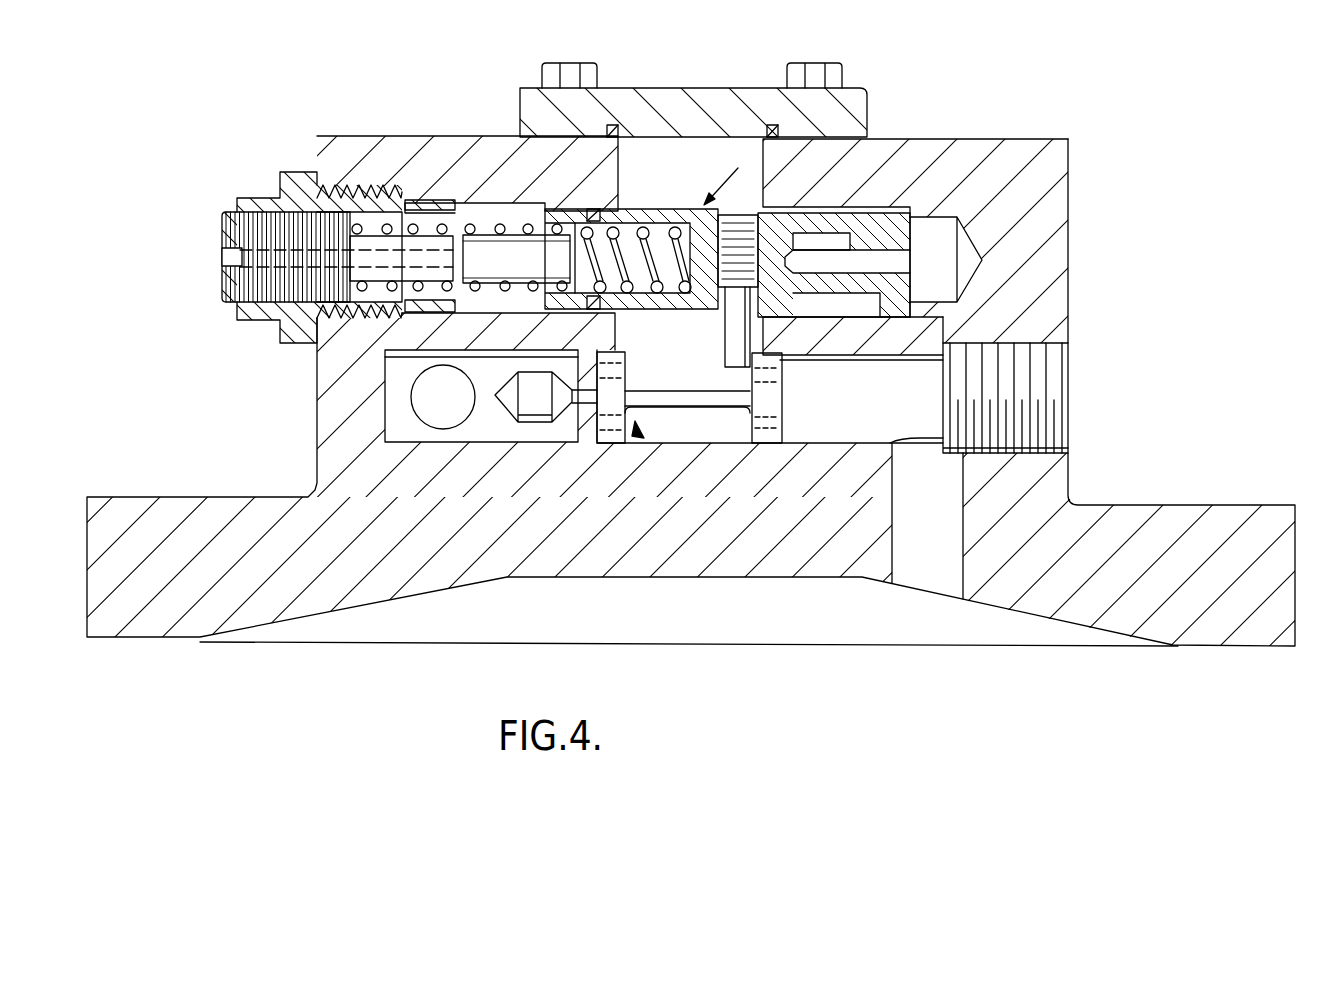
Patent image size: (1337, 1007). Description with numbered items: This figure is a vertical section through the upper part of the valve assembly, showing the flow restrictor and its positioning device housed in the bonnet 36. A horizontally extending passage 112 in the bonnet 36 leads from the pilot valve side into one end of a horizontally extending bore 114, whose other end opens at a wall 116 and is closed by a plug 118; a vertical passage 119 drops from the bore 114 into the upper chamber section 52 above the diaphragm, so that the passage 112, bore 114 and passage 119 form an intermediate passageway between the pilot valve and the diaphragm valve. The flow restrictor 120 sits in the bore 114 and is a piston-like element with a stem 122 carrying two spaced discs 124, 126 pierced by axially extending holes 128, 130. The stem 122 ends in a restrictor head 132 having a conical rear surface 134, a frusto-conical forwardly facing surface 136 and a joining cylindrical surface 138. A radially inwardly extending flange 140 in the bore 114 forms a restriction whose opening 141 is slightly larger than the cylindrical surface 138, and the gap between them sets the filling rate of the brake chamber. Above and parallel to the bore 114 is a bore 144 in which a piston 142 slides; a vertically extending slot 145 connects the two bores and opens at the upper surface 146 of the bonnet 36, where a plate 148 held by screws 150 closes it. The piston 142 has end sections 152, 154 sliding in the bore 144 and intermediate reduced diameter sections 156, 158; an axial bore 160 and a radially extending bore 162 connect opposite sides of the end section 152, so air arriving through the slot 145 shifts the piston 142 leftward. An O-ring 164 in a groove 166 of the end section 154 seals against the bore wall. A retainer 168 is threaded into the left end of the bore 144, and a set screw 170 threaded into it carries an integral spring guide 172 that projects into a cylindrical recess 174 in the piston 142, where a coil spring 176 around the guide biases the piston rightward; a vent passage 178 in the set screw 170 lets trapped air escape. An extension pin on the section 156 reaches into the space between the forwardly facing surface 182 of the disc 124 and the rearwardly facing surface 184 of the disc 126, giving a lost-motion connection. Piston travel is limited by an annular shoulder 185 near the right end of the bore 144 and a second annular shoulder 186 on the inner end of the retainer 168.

The bonnet 36 is at (317, 472).
The upper chamber section 52 is at (738, 641).
The horizontally extending passage 112 is at (418, 385).
The horizontally extending bore 114 is at (403, 432).
The wall 116 is at (1068, 476).
The plug 118 is at (1052, 390).
The vertical passage 119 is at (948, 586).
The flow restrictor 120 is at (638, 430).
The stem 122 is at (680, 400).
The disc 124 is at (610, 357).
The disc 126 is at (782, 445).
The axially extending holes 128 is at (625, 381).
The axially extending holes 130 is at (785, 381).
The restrictor head 132 is at (517, 405).
The conical rear surface 134 is at (495, 395).
The frusto-conical forwardly facing surface 136 is at (570, 381).
The cylindrical surface 138 is at (528, 445).
The radially inwardly extending flange 140 is at (575, 595).
The restriction opening 141 is at (530, 410).
The piston 142 is at (735, 172).
The bore 144 is at (470, 205).
The vertically extending slot 145 is at (765, 323).
The upper surface 146 is at (1035, 141).
The plate 148 is at (867, 111).
The screws 150 is at (570, 63).
The end section 152 is at (910, 208).
The end section 154 is at (567, 213).
The intermediate reduced diameter section 156 is at (712, 218).
The intermediate reduced diameter section 158 is at (808, 236).
The axial bore 160 is at (847, 264).
The radially extending bore 162 is at (835, 292).
The O-ring 164 is at (558, 211).
The groove 166 is at (593, 211).
The retainer 168 is at (283, 191).
The set screw 170 is at (218, 227).
The spring guide 172 is at (405, 257).
The cylindrical recess 174 is at (657, 240).
The coil spring 176 is at (468, 293).
The vent passage 178 is at (236, 263).
The forwardly facing surface 182 is at (625, 359).
The rearwardly facing surface 184 is at (746, 435).
The annular shoulder 185 is at (912, 293).
The second annular shoulder 186 is at (493, 203).